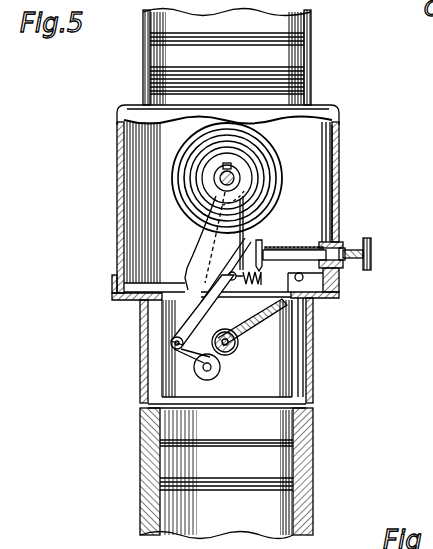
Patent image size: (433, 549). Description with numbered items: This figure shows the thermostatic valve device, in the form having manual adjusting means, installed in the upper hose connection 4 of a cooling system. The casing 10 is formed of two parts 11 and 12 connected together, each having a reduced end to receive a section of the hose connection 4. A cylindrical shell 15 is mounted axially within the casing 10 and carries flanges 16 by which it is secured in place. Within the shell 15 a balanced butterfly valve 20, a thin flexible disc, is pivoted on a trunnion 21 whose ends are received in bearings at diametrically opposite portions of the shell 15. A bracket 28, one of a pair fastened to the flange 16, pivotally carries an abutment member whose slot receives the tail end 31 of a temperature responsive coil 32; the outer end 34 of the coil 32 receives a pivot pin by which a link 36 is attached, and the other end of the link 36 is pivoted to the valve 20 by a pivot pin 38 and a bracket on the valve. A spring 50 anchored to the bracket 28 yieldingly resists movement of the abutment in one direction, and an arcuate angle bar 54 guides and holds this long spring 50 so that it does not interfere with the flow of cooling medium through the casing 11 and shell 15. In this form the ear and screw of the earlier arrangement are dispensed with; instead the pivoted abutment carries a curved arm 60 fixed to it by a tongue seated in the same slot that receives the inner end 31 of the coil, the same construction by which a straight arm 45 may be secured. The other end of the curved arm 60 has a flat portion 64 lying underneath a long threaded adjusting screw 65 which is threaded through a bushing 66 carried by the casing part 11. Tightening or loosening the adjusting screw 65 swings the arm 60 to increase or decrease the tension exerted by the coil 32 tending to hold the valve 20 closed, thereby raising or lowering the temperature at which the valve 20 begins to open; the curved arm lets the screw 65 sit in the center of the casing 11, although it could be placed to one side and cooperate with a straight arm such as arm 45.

The upper hose connection 4 is at (140, 420).
The casing 10 is at (367, 143).
The casing part 11 is at (341, 165).
The casing part 12 is at (316, 400).
The cylindrical shell 15 is at (300, 333).
The flanges 16 is at (112, 290).
The valve 20 is at (240, 330).
The trunnion 21 is at (236, 350).
The bracket 28 is at (200, 235).
The tail end of temperature responsive coil 31 is at (222, 170).
The temperature responsive coil 32 is at (182, 190).
The outer end of temperature responsive element 34 is at (162, 331).
The link 36 is at (168, 363).
The pivot pin 38 is at (203, 362).
The arm 45 is at (215, 254).
The spring 50 is at (304, 278).
The arcuate angle bar 54 is at (312, 304).
The curved arm 60 is at (264, 246).
The flat portion 64 is at (265, 252).
The adjusting screw 65 is at (372, 244).
The bushing 66 is at (370, 262).